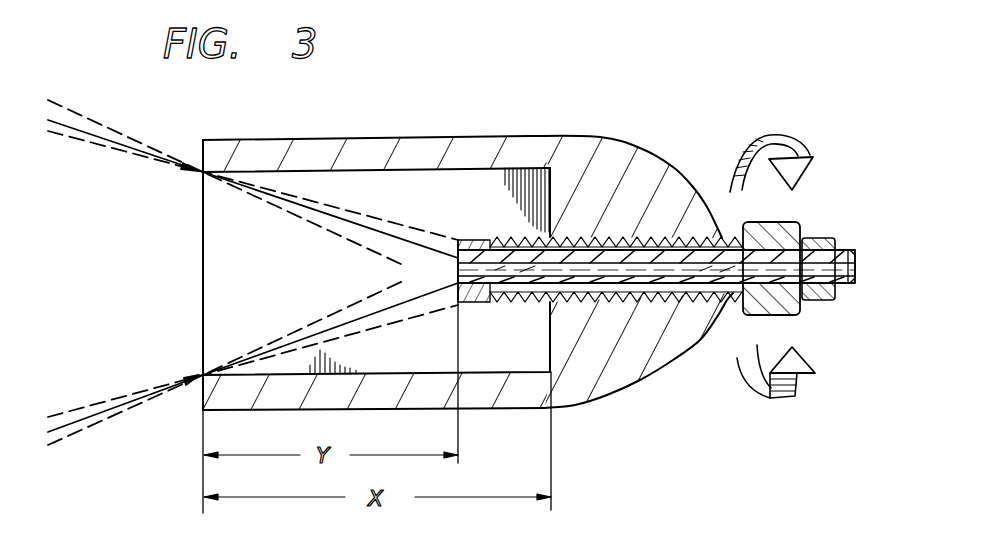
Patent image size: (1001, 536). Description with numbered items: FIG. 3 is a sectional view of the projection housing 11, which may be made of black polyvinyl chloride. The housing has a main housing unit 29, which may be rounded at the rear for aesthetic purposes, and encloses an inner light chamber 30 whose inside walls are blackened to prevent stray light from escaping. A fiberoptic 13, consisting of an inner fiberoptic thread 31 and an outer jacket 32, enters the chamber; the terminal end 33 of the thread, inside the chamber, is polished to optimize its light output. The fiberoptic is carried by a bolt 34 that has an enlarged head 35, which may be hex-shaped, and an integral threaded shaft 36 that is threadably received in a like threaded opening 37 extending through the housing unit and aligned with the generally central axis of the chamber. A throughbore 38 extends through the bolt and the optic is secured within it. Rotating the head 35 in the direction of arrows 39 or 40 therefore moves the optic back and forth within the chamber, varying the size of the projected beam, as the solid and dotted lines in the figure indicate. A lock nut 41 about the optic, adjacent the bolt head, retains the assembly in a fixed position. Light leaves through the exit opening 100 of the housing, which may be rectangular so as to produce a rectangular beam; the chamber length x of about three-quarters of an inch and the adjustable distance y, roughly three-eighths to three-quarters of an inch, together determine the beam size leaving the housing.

The projection housing 11 is at (487, 101).
The fiberoptic 13 is at (858, 284).
The main housing unit 29 is at (273, 140).
The inner light chamber 30 is at (382, 164).
The inner fiberoptic thread 31 is at (857, 264).
The outer jacket 32 is at (853, 287).
The terminal end 33 is at (458, 273).
The bolt 34 is at (818, 193).
The enlarged head 35 is at (762, 222).
The threaded shaft 36 is at (722, 290).
The threaded opening 37 is at (606, 252).
The throughbore 38 is at (652, 280).
The arrow 39 is at (802, 150).
The arrow 40 is at (752, 395).
The lock nut 41 is at (823, 234).
The exit opening 100 is at (203, 174).